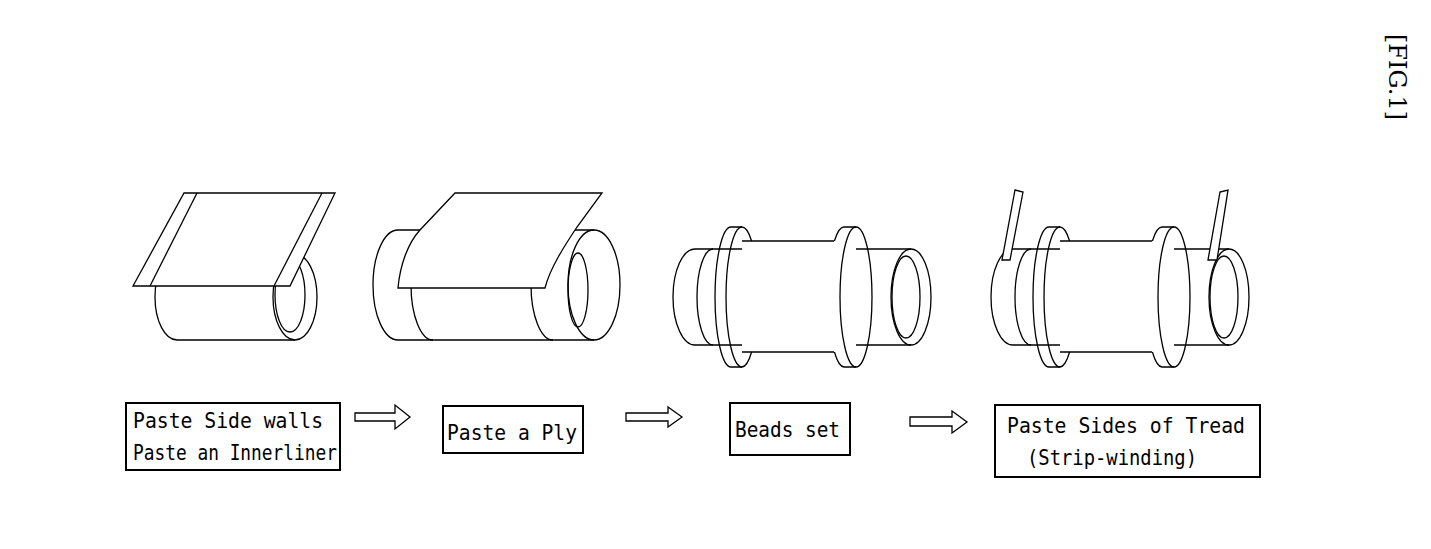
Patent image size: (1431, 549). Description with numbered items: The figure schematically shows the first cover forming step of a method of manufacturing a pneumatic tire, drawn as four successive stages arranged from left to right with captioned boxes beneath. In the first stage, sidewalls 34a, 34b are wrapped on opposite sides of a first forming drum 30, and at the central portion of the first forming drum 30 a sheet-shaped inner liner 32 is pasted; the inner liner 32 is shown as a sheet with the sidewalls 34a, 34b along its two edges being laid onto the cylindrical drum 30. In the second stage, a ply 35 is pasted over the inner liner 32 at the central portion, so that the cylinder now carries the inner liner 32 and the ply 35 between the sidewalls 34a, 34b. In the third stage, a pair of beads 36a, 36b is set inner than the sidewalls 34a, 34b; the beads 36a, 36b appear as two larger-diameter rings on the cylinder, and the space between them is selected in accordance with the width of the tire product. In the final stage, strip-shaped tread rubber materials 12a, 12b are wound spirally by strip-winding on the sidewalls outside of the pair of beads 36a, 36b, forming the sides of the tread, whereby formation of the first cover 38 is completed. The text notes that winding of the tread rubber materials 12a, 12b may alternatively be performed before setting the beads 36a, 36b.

The first forming drum 30 is at (175, 312).
The sheet-shaped inner liner 32 is at (234, 205).
The sidewall 34a is at (323, 200).
The sidewall 34b is at (172, 228).
The ply 35 is at (537, 197).
The bead 36a is at (853, 226).
The bead 36b is at (740, 225).
The strip-shaped tread rubber material 12a is at (1228, 210).
The strip-shaped tread rubber material 12b is at (1012, 215).
The first cover 38 is at (1257, 273).